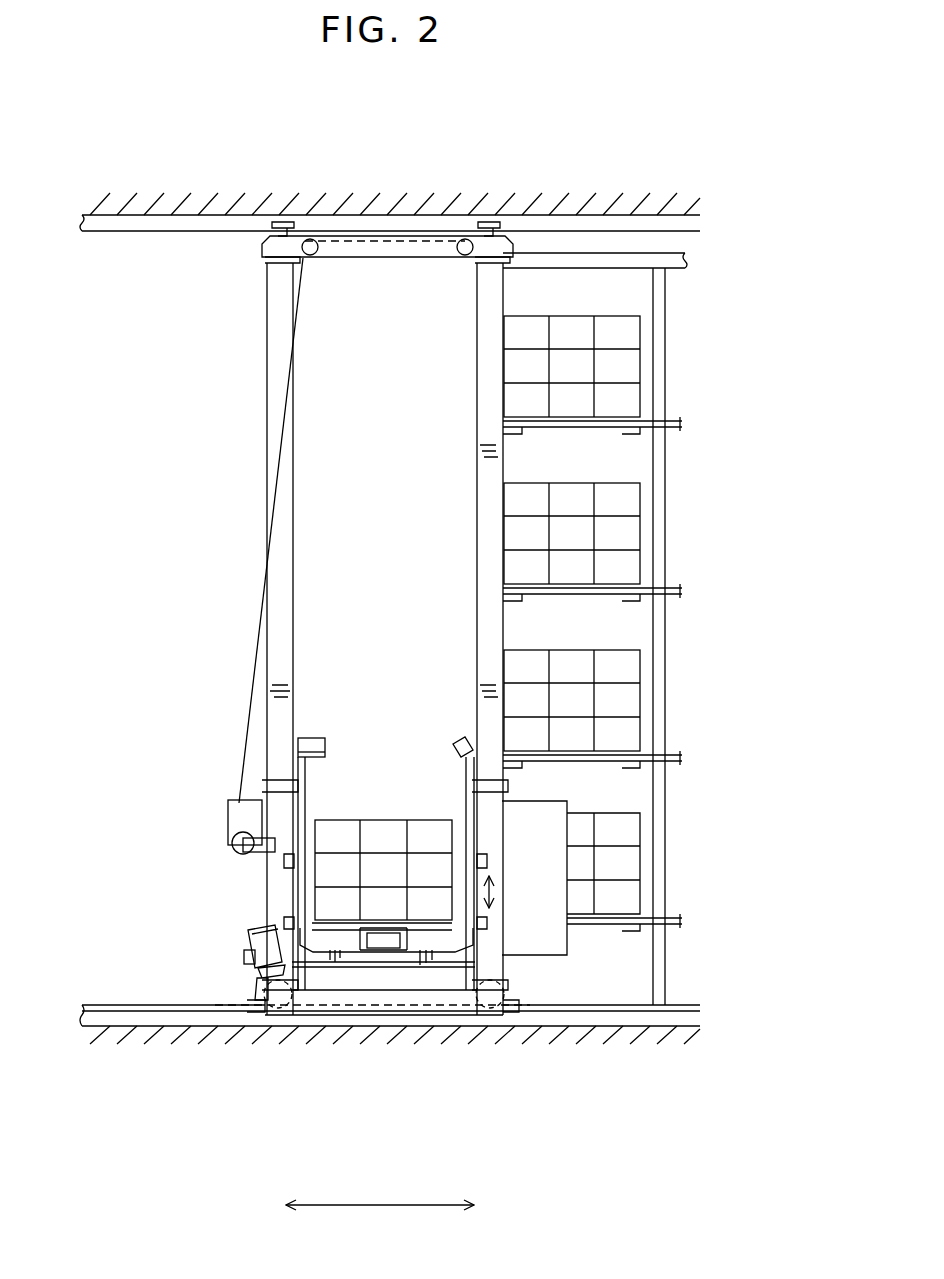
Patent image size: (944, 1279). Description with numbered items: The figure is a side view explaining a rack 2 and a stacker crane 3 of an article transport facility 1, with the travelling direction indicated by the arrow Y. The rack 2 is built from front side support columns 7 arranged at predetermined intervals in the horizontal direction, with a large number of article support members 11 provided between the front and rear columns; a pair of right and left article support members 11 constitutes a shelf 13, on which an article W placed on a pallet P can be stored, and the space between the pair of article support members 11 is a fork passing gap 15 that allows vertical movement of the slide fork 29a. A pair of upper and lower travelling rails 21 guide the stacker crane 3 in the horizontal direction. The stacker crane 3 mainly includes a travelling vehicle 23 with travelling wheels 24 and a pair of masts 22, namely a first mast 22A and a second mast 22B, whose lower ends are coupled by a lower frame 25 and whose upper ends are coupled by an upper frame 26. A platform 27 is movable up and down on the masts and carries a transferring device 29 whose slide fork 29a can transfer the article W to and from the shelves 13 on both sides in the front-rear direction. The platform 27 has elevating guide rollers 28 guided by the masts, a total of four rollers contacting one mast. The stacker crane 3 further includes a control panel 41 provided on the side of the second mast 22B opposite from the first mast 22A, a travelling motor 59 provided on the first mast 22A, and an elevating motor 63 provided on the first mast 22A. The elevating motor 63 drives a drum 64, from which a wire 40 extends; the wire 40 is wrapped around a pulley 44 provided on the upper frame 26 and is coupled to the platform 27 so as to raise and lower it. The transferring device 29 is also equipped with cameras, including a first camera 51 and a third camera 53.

The article transport facility 1 is at (132, 357).
The rack 2 is at (668, 337).
The stacker crane 3 is at (203, 515).
The front side support column 7 is at (658, 286).
The article support member 11 is at (510, 435).
The shelf 13 is at (628, 440).
The fork passing gap 15 is at (567, 432).
The travelling rail 21 is at (245, 226).
The mast 22 is at (385, 639).
The first mast 22A is at (300, 688).
The second mast 22B is at (458, 700).
The travelling vehicle 23 is at (361, 1020).
The travelling wheel 24 is at (270, 1017).
The lower frame 25 is at (331, 995).
The upper frame 26 is at (385, 243).
The platform 27 is at (445, 958).
The elevating guide roller 28 is at (283, 862).
The transferring device 29 is at (353, 942).
The slide fork 29a is at (385, 950).
The wire 40 is at (253, 685).
The control panel 41 is at (540, 868).
The pulley 44 is at (308, 243).
The first camera 51 is at (455, 750).
The third camera 53 is at (305, 745).
The travelling motor 59 is at (247, 930).
The elevating motor 63 is at (232, 806).
The drum 64 is at (240, 845).
The pallet P is at (243, 957).
The article W is at (572, 328).
The travel direction Y is at (380, 1191).